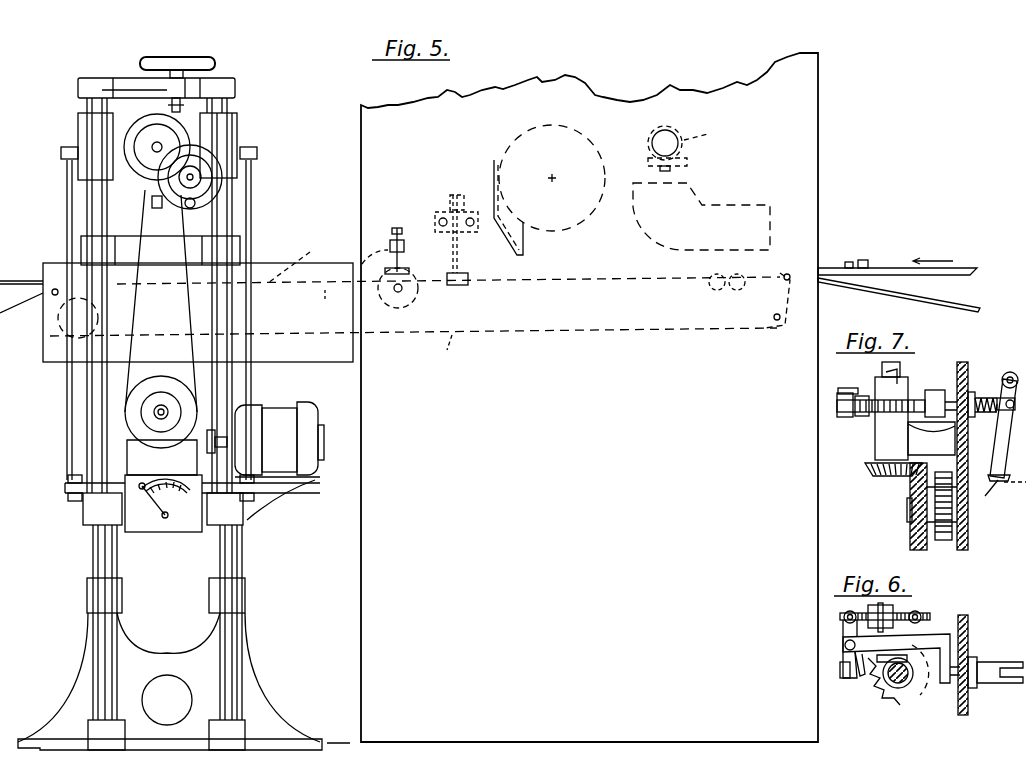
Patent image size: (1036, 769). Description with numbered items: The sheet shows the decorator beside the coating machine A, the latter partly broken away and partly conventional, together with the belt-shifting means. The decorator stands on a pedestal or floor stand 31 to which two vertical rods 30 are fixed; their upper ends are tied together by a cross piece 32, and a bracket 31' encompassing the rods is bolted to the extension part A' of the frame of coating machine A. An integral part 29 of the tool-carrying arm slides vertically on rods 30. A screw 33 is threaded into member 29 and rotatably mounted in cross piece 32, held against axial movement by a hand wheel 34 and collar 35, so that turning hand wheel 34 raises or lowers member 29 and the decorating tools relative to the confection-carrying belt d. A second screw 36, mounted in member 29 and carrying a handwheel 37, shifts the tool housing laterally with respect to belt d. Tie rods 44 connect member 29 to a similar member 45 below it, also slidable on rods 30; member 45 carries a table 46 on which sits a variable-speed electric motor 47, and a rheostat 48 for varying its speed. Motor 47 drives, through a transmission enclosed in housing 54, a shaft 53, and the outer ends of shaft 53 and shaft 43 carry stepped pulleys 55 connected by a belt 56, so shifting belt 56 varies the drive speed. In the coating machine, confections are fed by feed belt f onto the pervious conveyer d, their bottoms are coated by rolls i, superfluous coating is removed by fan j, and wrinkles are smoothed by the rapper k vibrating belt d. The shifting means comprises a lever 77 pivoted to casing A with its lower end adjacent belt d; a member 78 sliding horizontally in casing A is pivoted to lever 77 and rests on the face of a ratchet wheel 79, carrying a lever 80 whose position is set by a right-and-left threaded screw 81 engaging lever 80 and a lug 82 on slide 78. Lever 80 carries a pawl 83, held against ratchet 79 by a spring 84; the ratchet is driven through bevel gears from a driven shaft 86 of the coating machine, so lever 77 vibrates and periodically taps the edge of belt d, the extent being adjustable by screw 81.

In FIG. 5, the integral part of arm 29 is at (238, 126).
In FIG. 5, the vertically disposed rods 30 is at (106, 678).
In FIG. 5, the pedestal or floor stand 31 is at (184, 754).
In FIG. 5, the bracket 31' is at (187, 238).
In FIG. 5, the cross piece 32 is at (218, 82).
In FIG. 5, the screw 33 is at (184, 105).
In FIG. 5, the hand wheel 34 is at (177, 58).
In FIG. 5, the collar 35 is at (170, 104).
In FIG. 5, the screw 36 is at (191, 176).
In FIG. 5, the handwheel 37 is at (221, 192).
In FIG. 5, the shaft 43 is at (155, 147).
In FIG. 5, the tie rods 44 is at (253, 174).
In FIG. 5, the member 45 is at (90, 515).
In FIG. 5, the table 46 is at (318, 480).
In FIG. 5, the electric motor 47 is at (265, 438).
In FIG. 5, the rheostat 48 is at (140, 522).
In FIG. 5, the shaft 53 is at (163, 408).
In FIG. 5, the housing 54 is at (167, 502).
In FIG. 5, the stepped pulleys 55 is at (125, 165).
In FIG. 5, the belt 56 is at (186, 321).
In FIG. 5, the lever 77 is at (460, 265).
In FIG. 7, the lever 77 is at (989, 502).
In FIG. 7, the member (slide) 78 is at (934, 398).
In FIG. 6, the member (slide) 78 is at (945, 645).
In FIG. 7, the ratchet wheel 79 is at (898, 408).
In FIG. 6, the ratchet wheel 79 is at (900, 702).
In FIG. 7, the lever 80 is at (845, 418).
In FIG. 6, the lever 80 is at (850, 680).
In FIG. 6, the screw 81 is at (888, 611).
In FIG. 6, the lug 82 is at (932, 632).
In FIG. 7, the pawl 83 is at (856, 395).
In FIG. 6, the pawl 83 is at (862, 684).
In FIG. 7, the spring 84 is at (980, 392).
In FIG. 7, the driven shaft 86 is at (900, 480).
In FIG. 5, the coating machine A is at (589, 393).
In FIG. 5, the extension part of the frame A' is at (308, 366).
In FIG. 5, the pervious conveyer (belt) d is at (360, 303).
In FIG. 7, the pervious conveyer (belt) d is at (1018, 488).
In FIG. 5, the feed belt f is at (904, 285).
In FIG. 5, the rolls i is at (724, 292).
In FIG. 5, the fan j is at (556, 232).
In FIG. 5, the rapper k is at (520, 224).
In FIG. 5, the cutout q is at (722, 212).